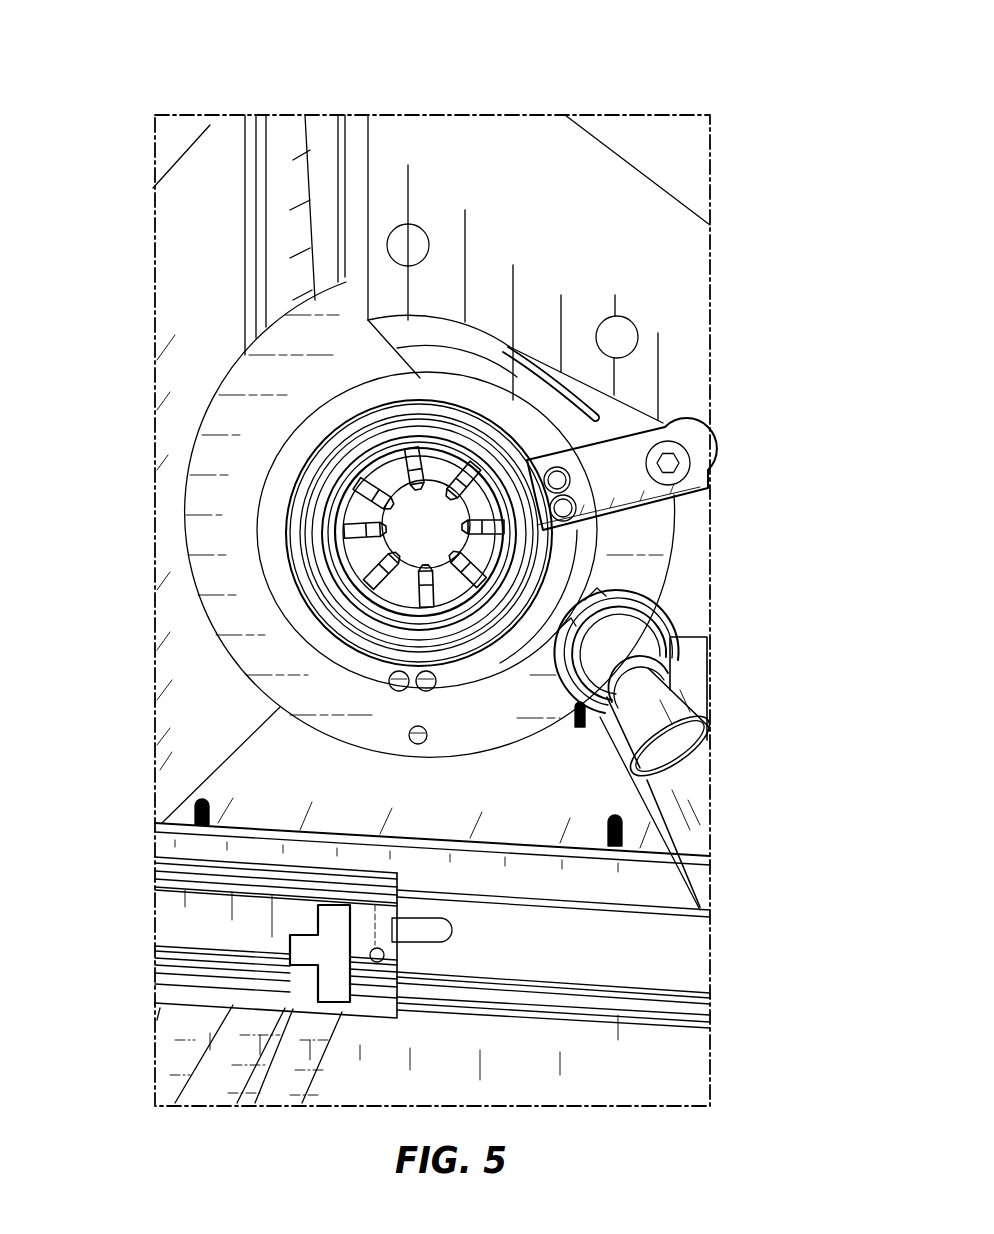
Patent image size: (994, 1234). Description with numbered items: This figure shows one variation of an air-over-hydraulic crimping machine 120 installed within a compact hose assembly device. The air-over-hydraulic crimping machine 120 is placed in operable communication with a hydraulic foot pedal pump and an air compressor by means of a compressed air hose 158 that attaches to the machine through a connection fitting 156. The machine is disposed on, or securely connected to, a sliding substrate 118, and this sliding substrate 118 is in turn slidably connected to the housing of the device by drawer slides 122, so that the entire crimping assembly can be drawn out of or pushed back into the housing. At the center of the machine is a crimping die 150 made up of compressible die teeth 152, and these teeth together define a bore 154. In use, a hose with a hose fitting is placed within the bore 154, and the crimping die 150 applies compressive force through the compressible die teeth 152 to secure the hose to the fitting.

The sliding substrate 118 is at (690, 648).
The air-over-hydraulic crimping machine 120 is at (617, 177).
The drawer slides 122 is at (547, 997).
The crimping die 150 is at (373, 512).
The compressible die teeth 152 is at (400, 470).
The bore 154 is at (405, 537).
The connection fitting 156 is at (637, 620).
The compressed air hose 158 is at (697, 775).